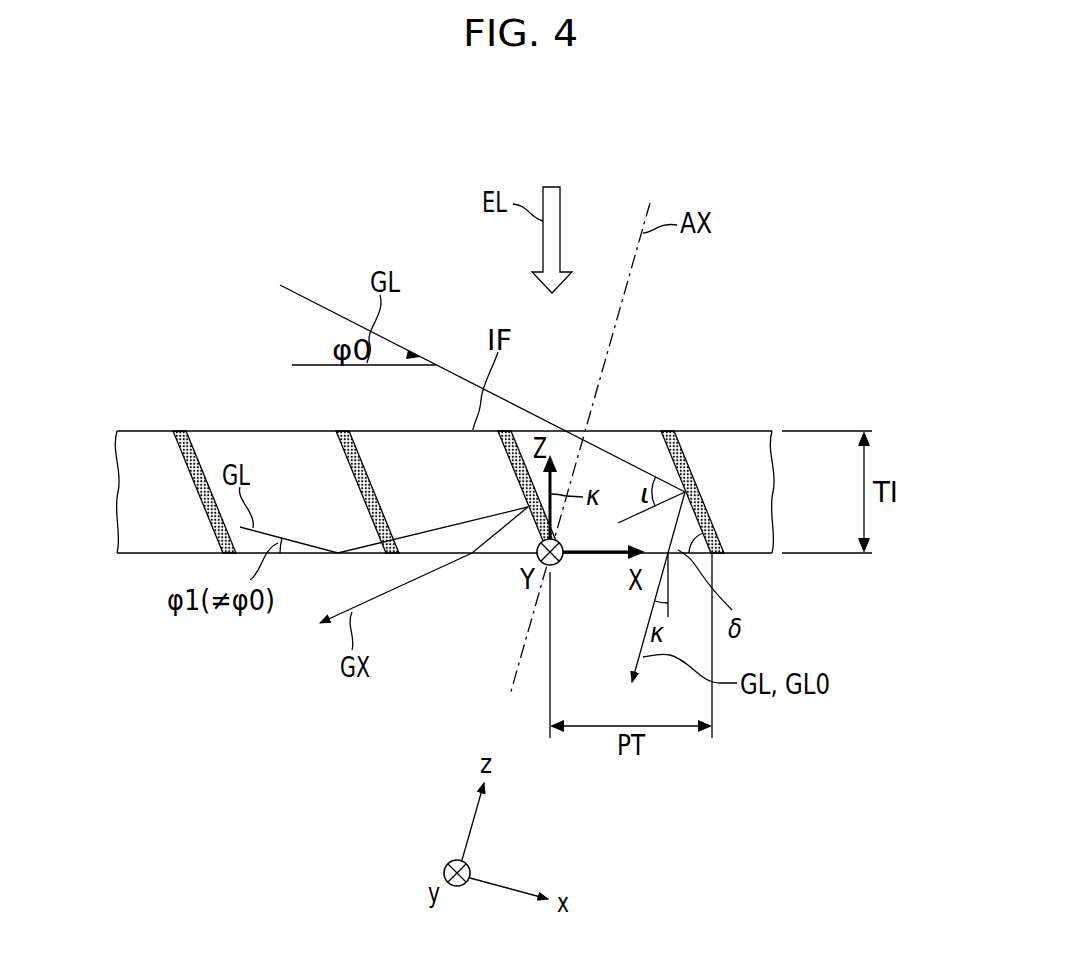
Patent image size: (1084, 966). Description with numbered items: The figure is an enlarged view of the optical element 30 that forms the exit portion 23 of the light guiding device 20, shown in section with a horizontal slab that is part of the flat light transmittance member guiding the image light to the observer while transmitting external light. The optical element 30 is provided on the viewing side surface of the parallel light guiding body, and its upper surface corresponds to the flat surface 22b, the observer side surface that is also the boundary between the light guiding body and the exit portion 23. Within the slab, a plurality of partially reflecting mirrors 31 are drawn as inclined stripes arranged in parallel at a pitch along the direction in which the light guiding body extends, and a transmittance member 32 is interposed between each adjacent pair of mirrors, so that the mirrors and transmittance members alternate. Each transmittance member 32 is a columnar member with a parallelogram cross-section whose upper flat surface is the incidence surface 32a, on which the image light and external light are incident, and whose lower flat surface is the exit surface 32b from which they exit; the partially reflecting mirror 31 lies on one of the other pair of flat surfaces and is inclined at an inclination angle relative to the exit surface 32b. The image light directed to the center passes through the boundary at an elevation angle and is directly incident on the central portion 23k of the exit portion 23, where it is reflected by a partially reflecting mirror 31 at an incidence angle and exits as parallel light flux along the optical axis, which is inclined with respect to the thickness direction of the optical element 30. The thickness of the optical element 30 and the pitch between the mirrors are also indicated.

The light guiding device 20 is at (444, 492).
The flat surface 22b is at (410, 553).
The exit portion 23 is at (736, 371).
The central portion of the exit portion 23k is at (577, 445).
The optical element 30 is at (688, 430).
The partially reflecting mirror 31 is at (198, 440).
The transmittance member 32 is at (293, 440).
The incidence surface 32a is at (362, 430).
The exit surface 32b is at (308, 553).